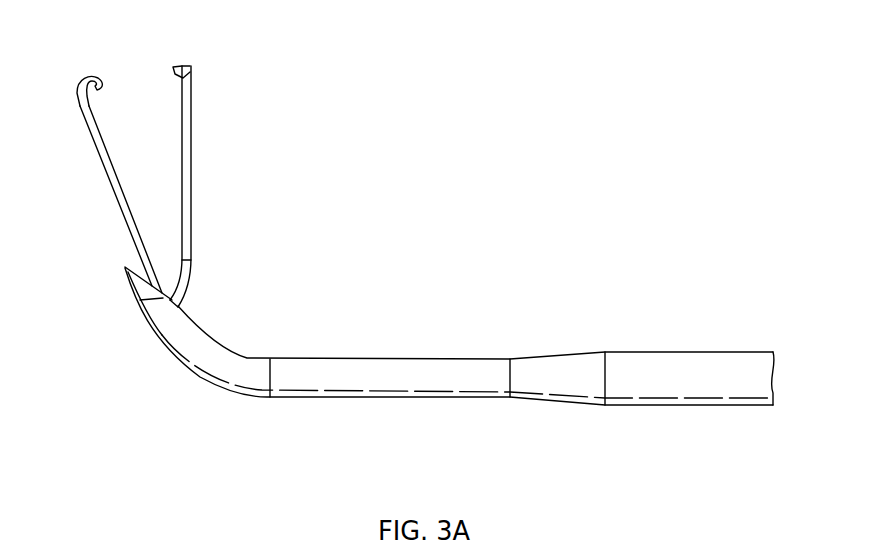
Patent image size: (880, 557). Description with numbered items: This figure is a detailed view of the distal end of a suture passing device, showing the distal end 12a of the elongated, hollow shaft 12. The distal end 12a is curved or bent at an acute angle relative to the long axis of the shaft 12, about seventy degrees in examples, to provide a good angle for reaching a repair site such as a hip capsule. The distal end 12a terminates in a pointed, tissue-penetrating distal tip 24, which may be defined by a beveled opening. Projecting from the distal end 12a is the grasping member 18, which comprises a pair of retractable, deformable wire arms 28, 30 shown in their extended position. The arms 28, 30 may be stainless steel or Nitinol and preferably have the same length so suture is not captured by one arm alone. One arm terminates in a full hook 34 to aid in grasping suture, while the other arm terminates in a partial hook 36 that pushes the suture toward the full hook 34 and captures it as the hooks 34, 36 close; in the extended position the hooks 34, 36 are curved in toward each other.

The shaft 12 is at (718, 362).
The distal end 12a is at (557, 193).
The grasping member 18 is at (268, 135).
The distal tip 24 is at (123, 267).
The wire arm 28 is at (98, 147).
The wire arm 30 is at (190, 230).
The full hook 34 is at (80, 82).
The partial hook 36 is at (190, 66).